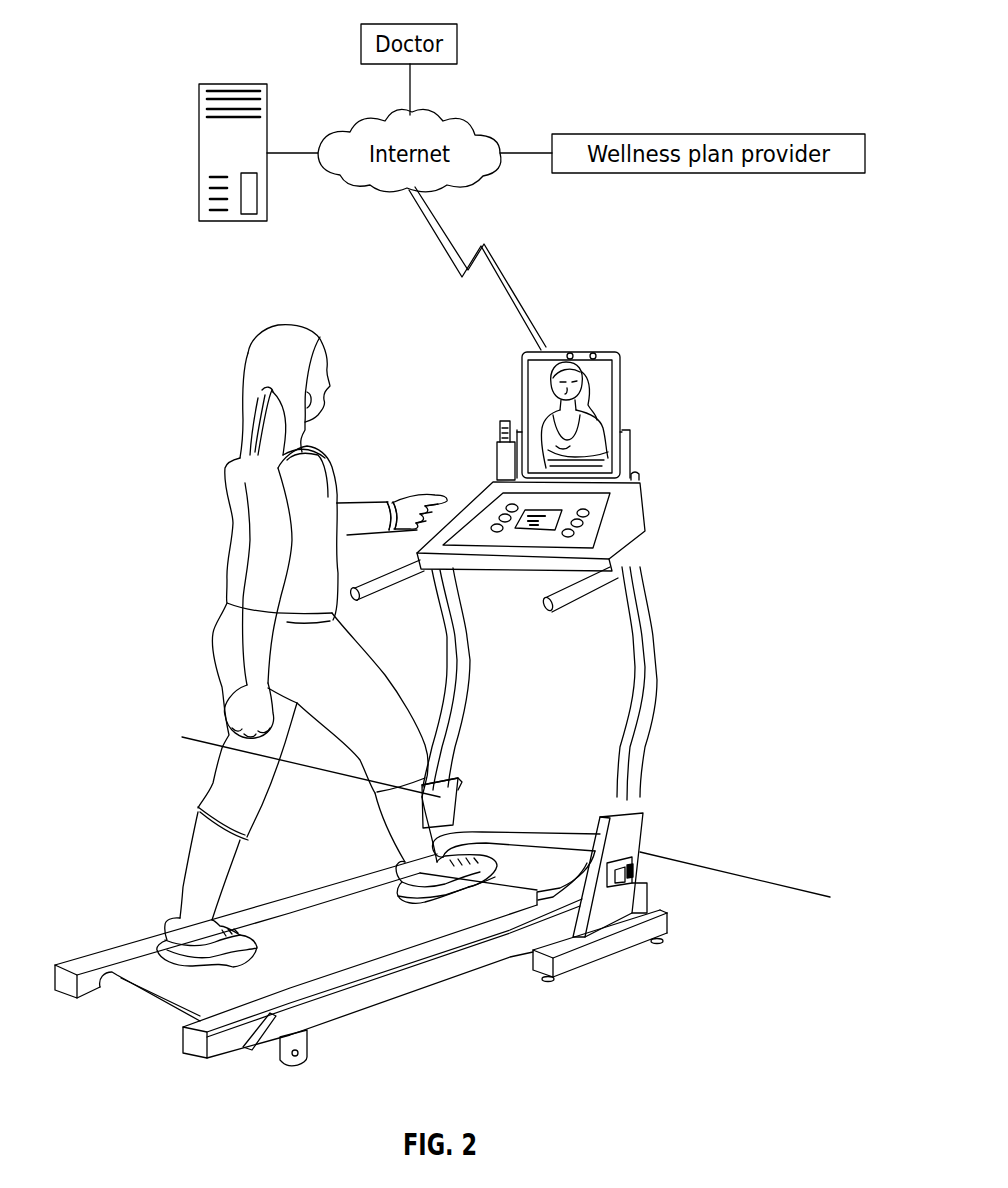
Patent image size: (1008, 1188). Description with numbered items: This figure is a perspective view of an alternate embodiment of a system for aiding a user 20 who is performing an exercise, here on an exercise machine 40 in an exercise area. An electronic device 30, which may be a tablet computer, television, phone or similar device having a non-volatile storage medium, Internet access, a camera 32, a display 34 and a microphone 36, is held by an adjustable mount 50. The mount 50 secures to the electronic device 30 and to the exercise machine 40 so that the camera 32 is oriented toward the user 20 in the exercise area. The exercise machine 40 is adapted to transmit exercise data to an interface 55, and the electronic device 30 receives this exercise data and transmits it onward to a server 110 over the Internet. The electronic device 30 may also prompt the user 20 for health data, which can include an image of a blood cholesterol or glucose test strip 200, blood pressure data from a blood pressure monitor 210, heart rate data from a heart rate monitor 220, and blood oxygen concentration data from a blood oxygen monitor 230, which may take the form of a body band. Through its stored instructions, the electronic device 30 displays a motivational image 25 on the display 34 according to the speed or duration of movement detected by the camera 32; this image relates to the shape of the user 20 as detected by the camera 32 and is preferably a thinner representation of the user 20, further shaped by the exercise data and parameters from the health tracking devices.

The server 110 is at (199, 152).
The user 20 is at (258, 362).
The blood pressure monitor 210 is at (391, 503).
The heart rate monitor 220 is at (389, 516).
The blood oxygen monitor 230 is at (395, 515).
The camera 32 is at (567, 344).
The microphone 36 is at (597, 346).
The electronic device 30 is at (621, 366).
The display 34 is at (606, 401).
The motivational image 25 is at (535, 398).
The glucose test strip 200 is at (498, 428).
The exercise machine 40 is at (478, 492).
The adjustable mount 50 is at (631, 433).
The interface 55 is at (651, 467).